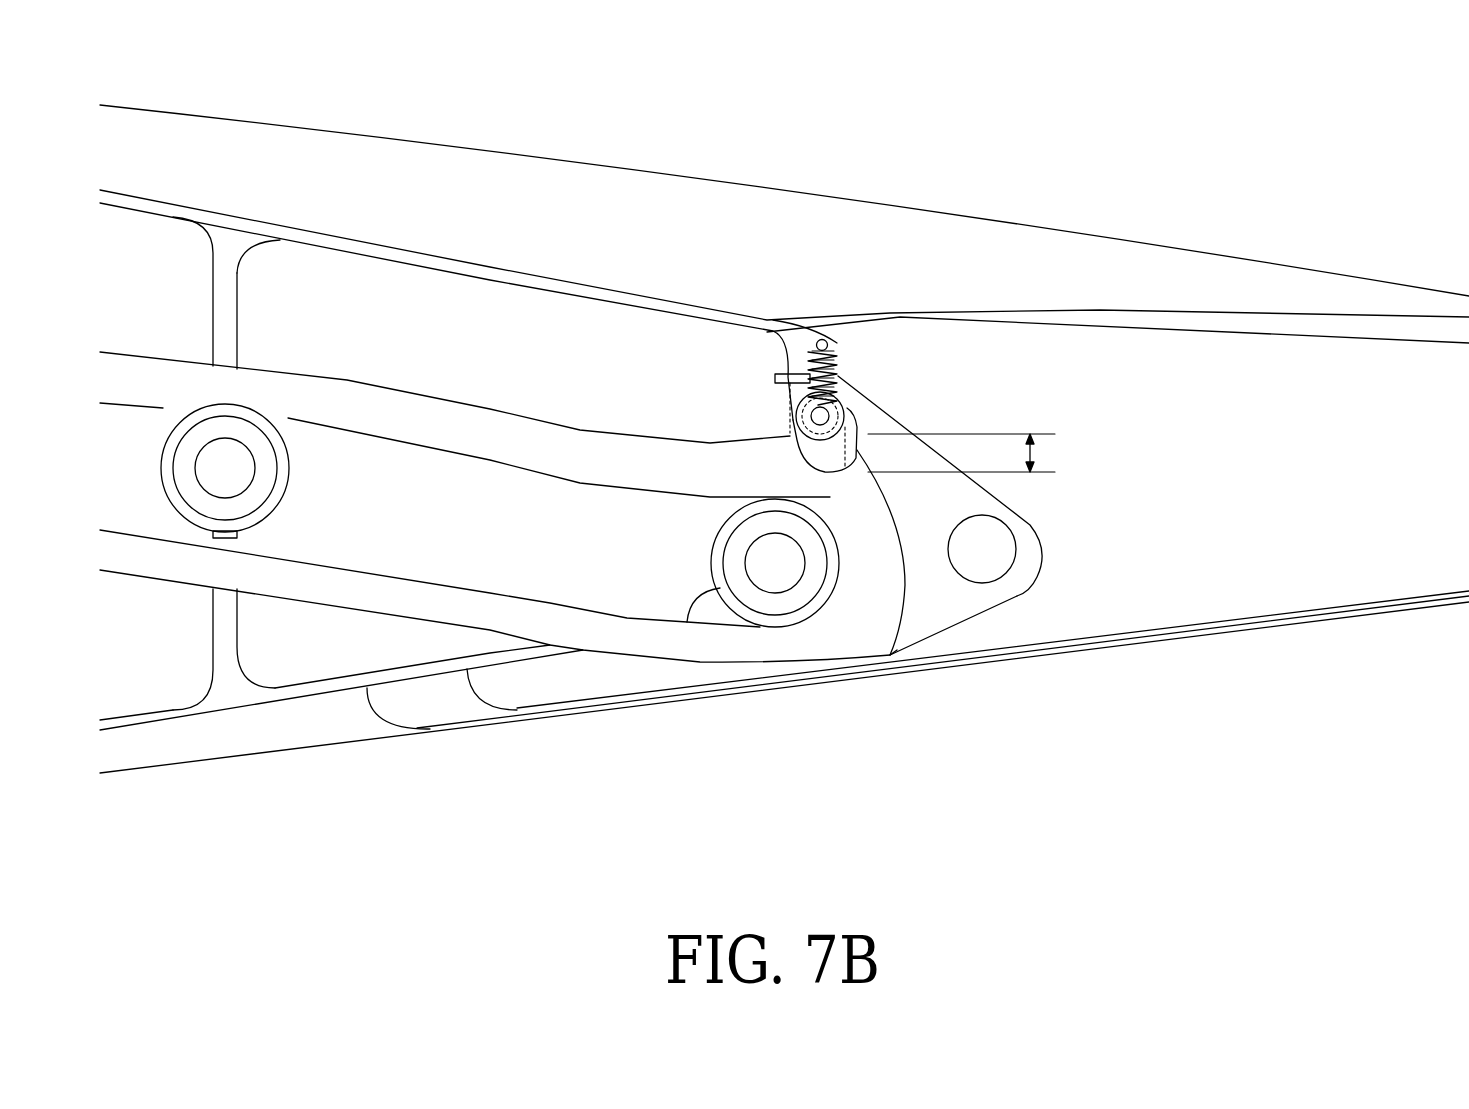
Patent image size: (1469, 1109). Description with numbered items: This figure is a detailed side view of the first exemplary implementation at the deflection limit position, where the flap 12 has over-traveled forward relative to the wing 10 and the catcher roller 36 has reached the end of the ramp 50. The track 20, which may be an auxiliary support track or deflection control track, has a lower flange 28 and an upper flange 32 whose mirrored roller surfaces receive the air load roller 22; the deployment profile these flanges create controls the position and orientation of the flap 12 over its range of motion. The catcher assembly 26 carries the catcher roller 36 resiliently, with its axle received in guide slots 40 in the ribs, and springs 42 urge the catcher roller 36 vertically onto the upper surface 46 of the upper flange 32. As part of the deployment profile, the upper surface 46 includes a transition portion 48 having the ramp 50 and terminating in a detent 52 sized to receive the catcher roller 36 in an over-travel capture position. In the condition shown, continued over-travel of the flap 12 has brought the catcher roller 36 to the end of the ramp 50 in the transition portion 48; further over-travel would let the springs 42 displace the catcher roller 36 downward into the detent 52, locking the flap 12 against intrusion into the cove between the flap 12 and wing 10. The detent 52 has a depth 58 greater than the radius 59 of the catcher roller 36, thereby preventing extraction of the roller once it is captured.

The wing 10 is at (333, 131).
The flap 12 is at (1370, 607).
The track 20 is at (943, 603).
The air load roller 22 is at (287, 490).
The catcher assembly 26 is at (957, 358).
The lower flange 28 is at (324, 582).
The upper flange 32 is at (391, 413).
The catcher roller 36 is at (790, 422).
The guide slots 40 is at (790, 443).
The springs 42 is at (837, 372).
The upper surface 46 is at (580, 432).
The transition portion 48 is at (773, 483).
The ramp 50 is at (843, 497).
The detent 52 is at (838, 460).
The depth 58 is at (1032, 455).
The radius 59 is at (833, 424).